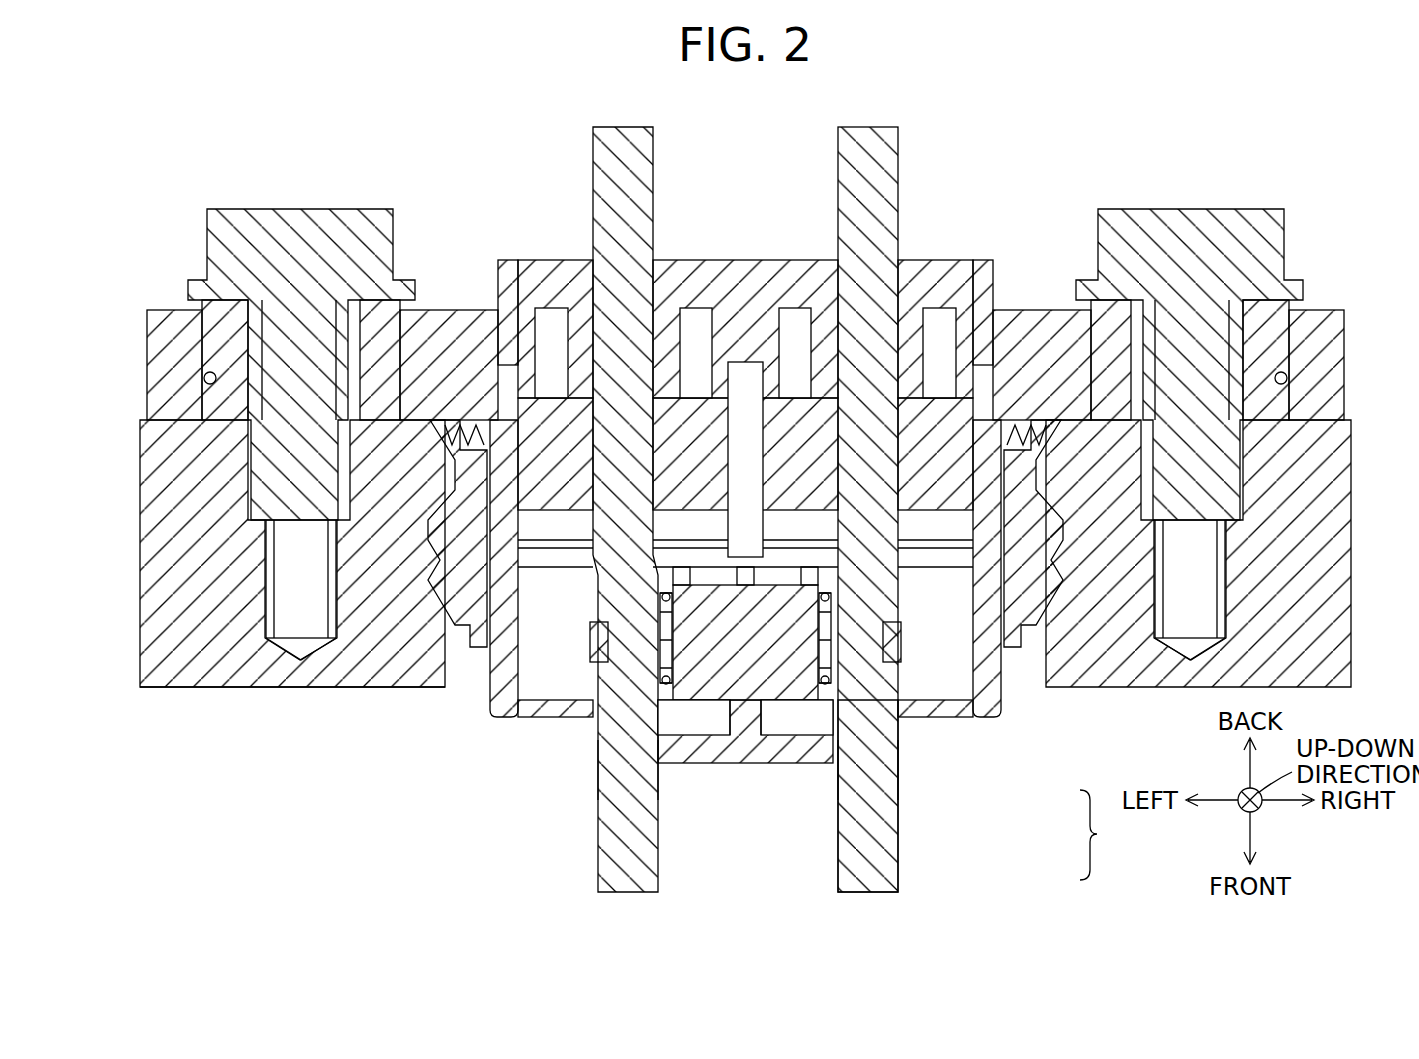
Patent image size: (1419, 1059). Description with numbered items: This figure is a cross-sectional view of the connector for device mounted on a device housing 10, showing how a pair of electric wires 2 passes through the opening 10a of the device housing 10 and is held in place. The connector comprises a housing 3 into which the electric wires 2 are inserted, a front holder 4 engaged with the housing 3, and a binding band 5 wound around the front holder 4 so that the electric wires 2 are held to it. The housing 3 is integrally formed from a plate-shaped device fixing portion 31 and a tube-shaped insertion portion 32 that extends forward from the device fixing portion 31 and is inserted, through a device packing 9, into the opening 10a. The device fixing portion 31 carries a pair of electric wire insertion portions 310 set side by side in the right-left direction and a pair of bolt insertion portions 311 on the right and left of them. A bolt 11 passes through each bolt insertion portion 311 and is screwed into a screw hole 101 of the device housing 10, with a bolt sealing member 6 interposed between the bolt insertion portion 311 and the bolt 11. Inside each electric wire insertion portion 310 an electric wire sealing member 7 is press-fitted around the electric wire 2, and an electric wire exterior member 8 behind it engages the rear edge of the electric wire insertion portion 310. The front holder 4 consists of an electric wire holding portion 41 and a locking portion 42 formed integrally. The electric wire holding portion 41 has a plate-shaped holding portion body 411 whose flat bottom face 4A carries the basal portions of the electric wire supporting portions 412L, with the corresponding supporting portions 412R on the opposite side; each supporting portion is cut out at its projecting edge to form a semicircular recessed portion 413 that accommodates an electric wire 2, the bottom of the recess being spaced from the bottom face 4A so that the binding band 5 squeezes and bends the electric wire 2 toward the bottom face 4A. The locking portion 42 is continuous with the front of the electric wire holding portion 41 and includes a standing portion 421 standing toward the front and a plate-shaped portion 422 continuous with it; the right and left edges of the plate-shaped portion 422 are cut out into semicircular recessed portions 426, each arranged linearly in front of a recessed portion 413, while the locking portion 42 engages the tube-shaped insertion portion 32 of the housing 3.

The electric wire 2 is at (618, 132).
The housing 3 is at (505, 720).
The front holder 4 is at (900, 760).
The bottom face 4A is at (700, 636).
The binding band 5 is at (903, 640).
The bolt sealing member 6 is at (210, 365).
The electric wire sealing member 7 is at (508, 300).
The electric wire exterior member 8 is at (555, 300).
The device packing 9 is at (460, 420).
The device housing 10 is at (385, 688).
The opening 10a is at (445, 700).
The bolt 11 is at (310, 210).
The device fixing portion 31 is at (150, 395).
The tube-shaped insertion portion 32 is at (470, 650).
The electric wire holding portion 41 is at (1066, 835).
The locking portion 42 is at (745, 772).
The screw hole 101 is at (266, 555).
The electric wire insertion portion 310 is at (728, 370).
The bolt insertion portion 311 is at (204, 378).
The holding portion body 411 is at (660, 620).
The electric wire supporting portion 412L is at (660, 595).
The right joint 412R is at (831, 595).
The recessed portion 413 is at (819, 597).
The standing portion 421 is at (790, 740).
The plate-shaped portion 422 is at (745, 765).
The recessed portion 426 is at (600, 760).